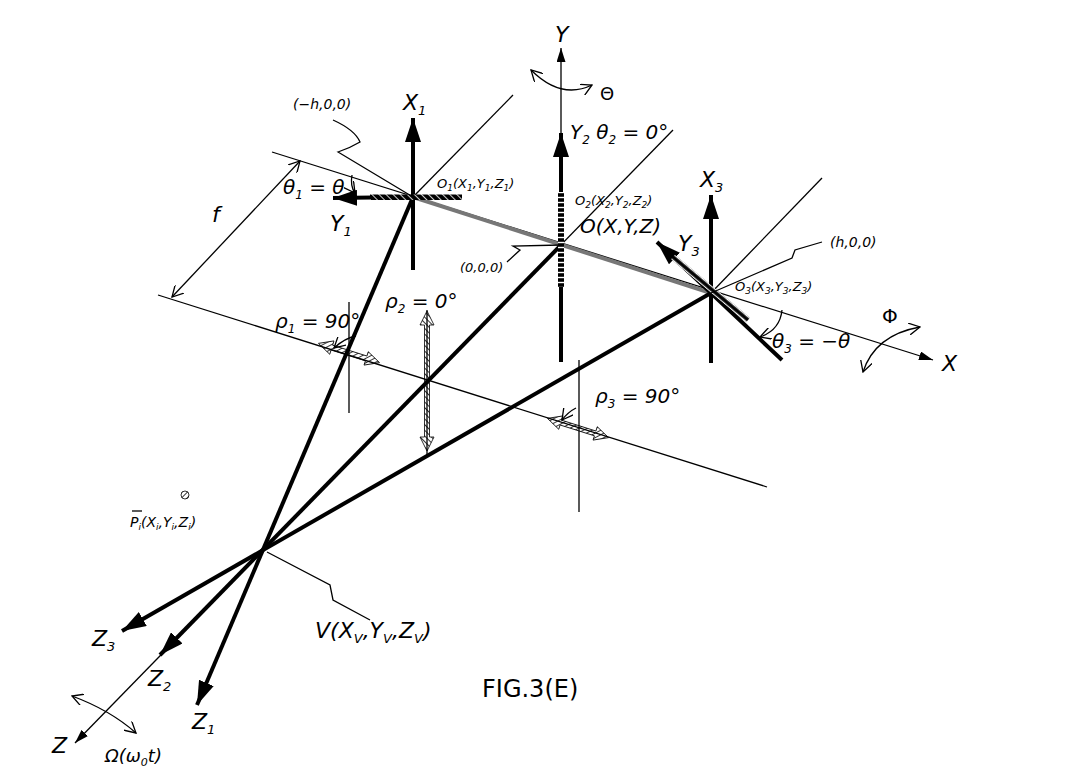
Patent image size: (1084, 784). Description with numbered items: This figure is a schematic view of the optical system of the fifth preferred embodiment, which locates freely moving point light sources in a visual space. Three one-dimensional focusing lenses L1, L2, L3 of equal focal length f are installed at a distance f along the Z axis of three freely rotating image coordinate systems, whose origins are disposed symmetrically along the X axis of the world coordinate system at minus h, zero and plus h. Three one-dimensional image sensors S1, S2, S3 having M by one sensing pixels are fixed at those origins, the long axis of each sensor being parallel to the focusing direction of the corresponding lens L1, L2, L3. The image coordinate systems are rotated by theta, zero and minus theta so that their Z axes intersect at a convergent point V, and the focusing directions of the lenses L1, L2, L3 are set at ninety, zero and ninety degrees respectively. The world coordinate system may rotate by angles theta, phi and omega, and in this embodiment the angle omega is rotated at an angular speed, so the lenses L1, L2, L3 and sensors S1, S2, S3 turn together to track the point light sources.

The 1D image sensor S1 is at (424, 204).
The 1D image sensor S2 is at (565, 260).
The 1D image sensor S3 is at (700, 289).
The 1D focusing lens L1 is at (349, 353).
The 1D focusing lens L2 is at (427, 382).
The 1D focusing lens L3 is at (578, 435).